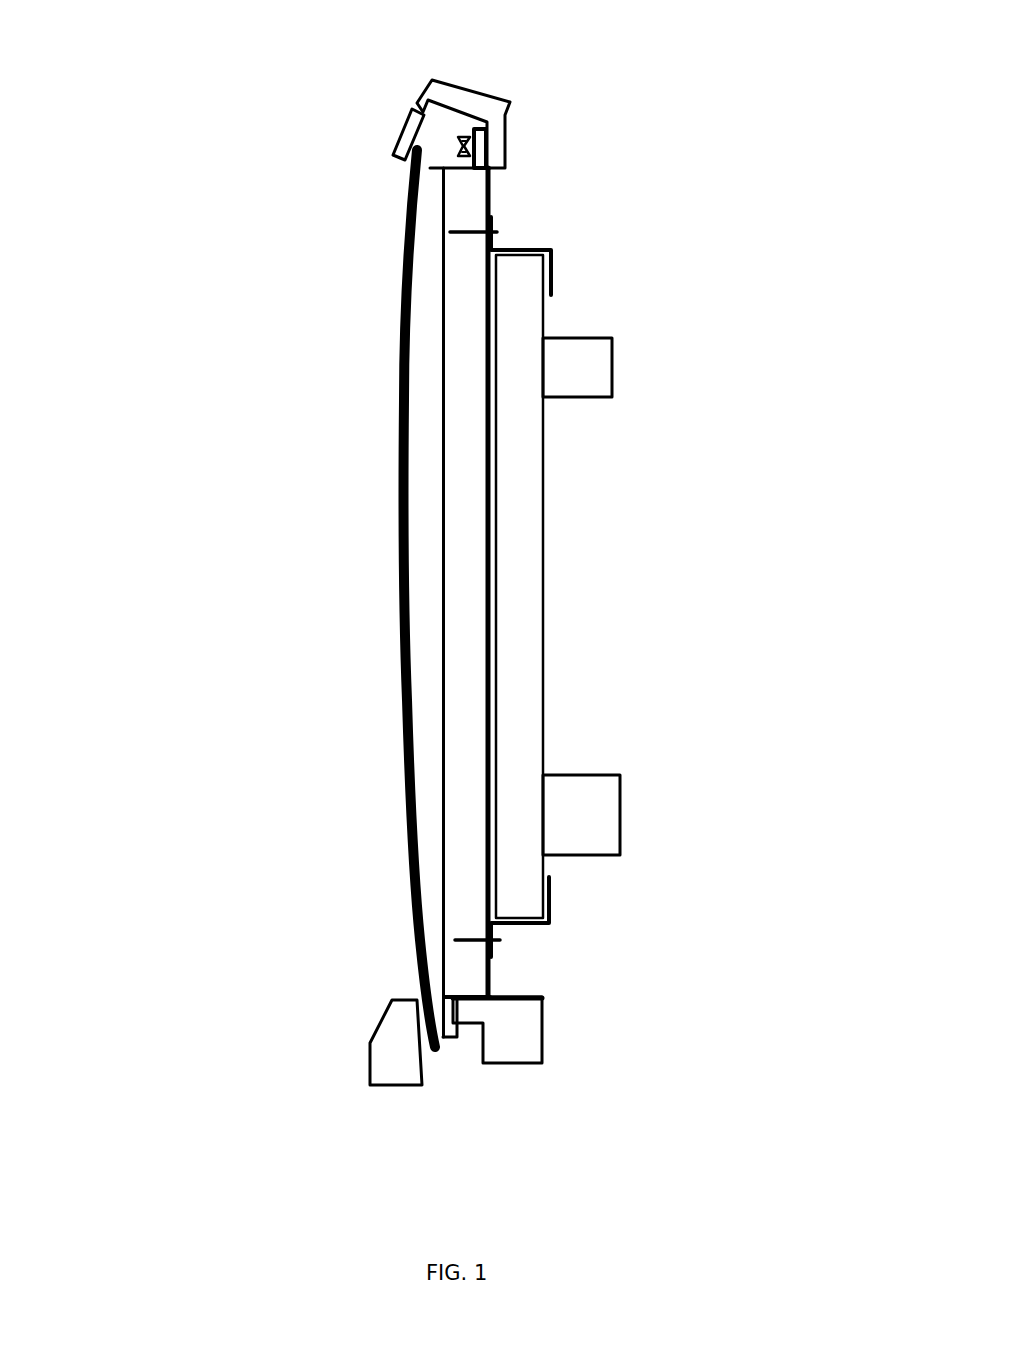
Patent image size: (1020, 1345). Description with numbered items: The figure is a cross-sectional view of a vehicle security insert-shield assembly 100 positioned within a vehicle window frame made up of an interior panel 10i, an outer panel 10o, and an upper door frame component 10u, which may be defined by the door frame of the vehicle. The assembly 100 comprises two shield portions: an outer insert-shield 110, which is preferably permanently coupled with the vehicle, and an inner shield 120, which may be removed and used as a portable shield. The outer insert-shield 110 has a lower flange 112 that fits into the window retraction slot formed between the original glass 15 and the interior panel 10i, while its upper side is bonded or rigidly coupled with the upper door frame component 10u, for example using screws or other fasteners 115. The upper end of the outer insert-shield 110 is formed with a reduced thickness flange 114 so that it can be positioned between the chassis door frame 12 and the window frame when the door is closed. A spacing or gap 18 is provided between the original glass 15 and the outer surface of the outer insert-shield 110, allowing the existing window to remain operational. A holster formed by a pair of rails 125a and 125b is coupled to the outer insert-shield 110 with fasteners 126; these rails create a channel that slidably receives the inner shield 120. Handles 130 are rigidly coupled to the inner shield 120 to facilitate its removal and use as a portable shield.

The vehicle security insert-shield assembly 100 is at (644, 97).
The chassis door frame 12 is at (490, 95).
The upper door frame component 10u is at (400, 148).
The fasteners 115 is at (440, 148).
The reduced thickness flange 114 is at (440, 176).
The outer insert-shield 110 is at (463, 343).
The lower flange 112 is at (453, 1042).
The fasteners 126 is at (456, 240).
The rail 125b is at (552, 272).
The rail 125a is at (492, 953).
The inner shield 120 is at (524, 548).
The handles 130 is at (614, 370).
The spacing/gap 18 is at (420, 670).
The original glass 15 is at (407, 805).
The outer panel 10o is at (388, 1055).
The interior panel 10i is at (530, 1040).